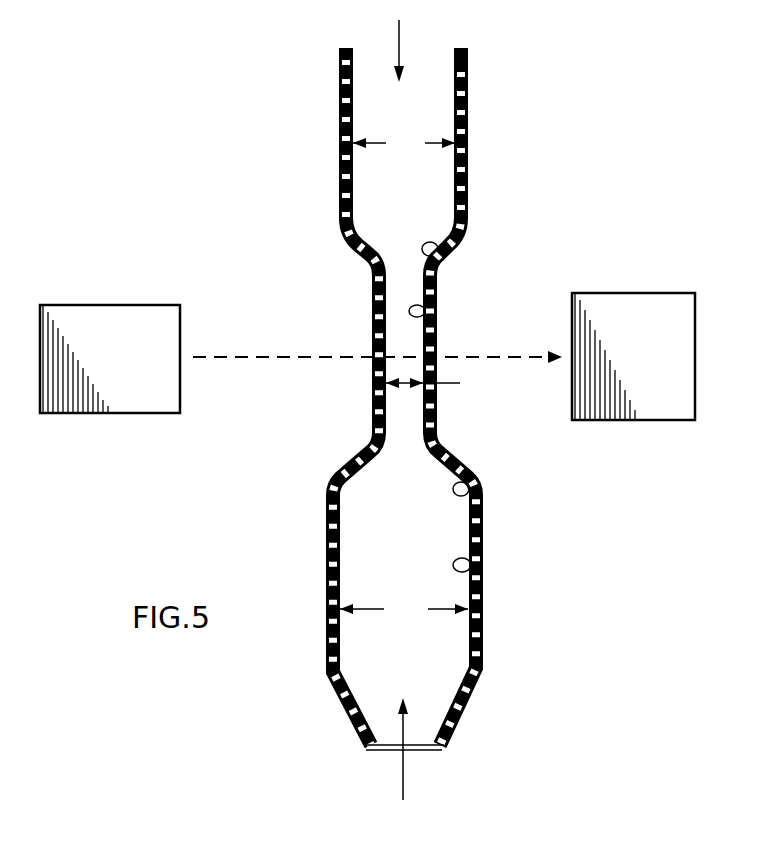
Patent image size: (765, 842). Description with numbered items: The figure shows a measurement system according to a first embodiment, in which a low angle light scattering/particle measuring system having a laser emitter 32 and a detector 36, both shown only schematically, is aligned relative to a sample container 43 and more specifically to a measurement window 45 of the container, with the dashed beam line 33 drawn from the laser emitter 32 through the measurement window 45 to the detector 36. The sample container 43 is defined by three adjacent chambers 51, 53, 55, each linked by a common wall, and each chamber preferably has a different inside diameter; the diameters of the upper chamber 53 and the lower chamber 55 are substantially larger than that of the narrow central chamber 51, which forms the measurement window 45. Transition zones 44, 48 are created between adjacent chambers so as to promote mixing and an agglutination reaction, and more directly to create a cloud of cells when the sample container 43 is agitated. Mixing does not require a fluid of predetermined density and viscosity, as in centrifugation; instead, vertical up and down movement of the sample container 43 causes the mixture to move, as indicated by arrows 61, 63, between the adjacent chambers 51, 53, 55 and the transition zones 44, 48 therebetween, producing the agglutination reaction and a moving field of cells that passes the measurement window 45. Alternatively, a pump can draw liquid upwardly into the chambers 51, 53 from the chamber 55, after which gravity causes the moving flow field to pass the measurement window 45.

The laser emitter 32 is at (108, 305).
The radiation beam 33 is at (264, 357).
The detector 36 is at (657, 413).
The sample container 43 is at (354, 399).
The transition zone 44 is at (437, 262).
The measurement window 45 is at (372, 325).
The transition zone 48 is at (468, 489).
The chamber 51 is at (425, 311).
The chamber 53 is at (330, 215).
The chamber 55 is at (470, 565).
The arrow 61 is at (399, 32).
The arrow 63 is at (403, 775).